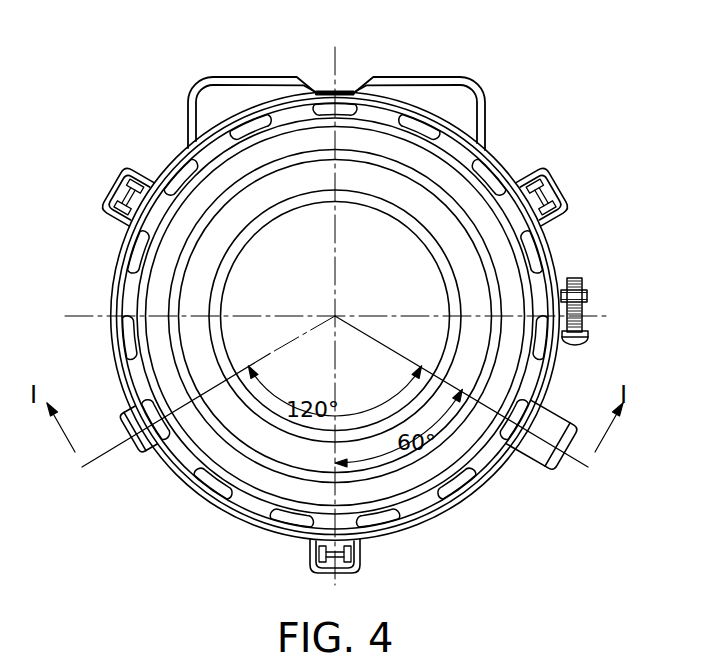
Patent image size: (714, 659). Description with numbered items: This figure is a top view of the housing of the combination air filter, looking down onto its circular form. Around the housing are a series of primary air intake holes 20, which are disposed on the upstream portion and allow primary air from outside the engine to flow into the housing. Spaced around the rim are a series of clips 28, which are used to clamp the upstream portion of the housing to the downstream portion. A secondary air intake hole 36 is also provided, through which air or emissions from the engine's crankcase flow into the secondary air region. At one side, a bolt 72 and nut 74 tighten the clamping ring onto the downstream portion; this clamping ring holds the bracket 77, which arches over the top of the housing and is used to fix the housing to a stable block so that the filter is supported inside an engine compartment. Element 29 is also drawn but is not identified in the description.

The primary air intake holes 20 is at (418, 120).
The clips 28 is at (113, 192).
The locating lug 29 is at (141, 455).
The secondary air intake hole 36 is at (540, 470).
The bolt 72 is at (583, 318).
The nut 74 is at (585, 297).
The bracket 77 is at (212, 76).